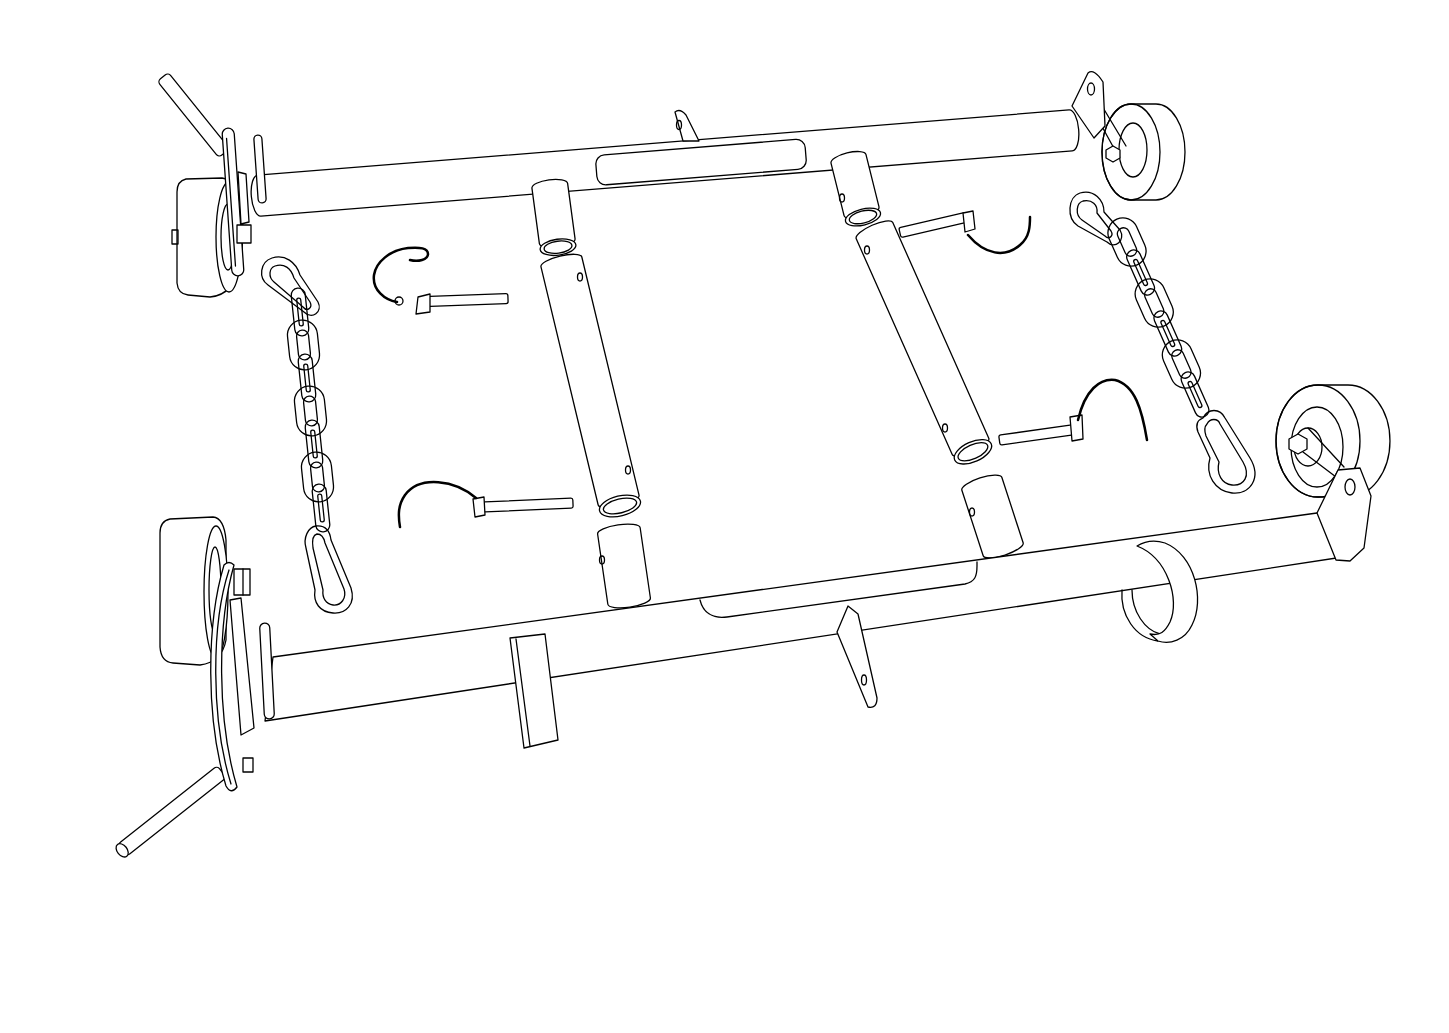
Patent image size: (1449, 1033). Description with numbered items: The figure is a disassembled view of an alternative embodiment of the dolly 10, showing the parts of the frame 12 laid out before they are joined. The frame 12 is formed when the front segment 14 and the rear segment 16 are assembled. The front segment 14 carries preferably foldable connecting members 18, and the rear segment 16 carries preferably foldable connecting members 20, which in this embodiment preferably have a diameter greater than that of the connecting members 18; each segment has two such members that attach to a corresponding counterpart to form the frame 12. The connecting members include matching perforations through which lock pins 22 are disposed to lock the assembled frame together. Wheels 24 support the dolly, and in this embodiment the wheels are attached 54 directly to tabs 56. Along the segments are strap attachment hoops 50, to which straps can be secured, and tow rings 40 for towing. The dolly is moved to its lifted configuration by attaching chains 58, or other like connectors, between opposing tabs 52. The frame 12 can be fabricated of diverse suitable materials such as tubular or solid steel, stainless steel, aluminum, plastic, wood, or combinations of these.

The dolly 10 is at (1207, 67).
The frame 12 is at (917, 114).
The front segment 14 is at (368, 683).
The rear segment 16 is at (413, 173).
The connecting members 18 is at (560, 223).
The connecting members 20 is at (620, 373).
The lock pins 22 is at (476, 306).
The wheels 24 is at (178, 271).
The tow rings 40 is at (683, 110).
The strap attachment hoops 50 is at (540, 746).
The tabs 52 is at (270, 152).
The wheel attachment 54 is at (244, 250).
The tabs 56 is at (233, 129).
The chains 58 is at (332, 421).